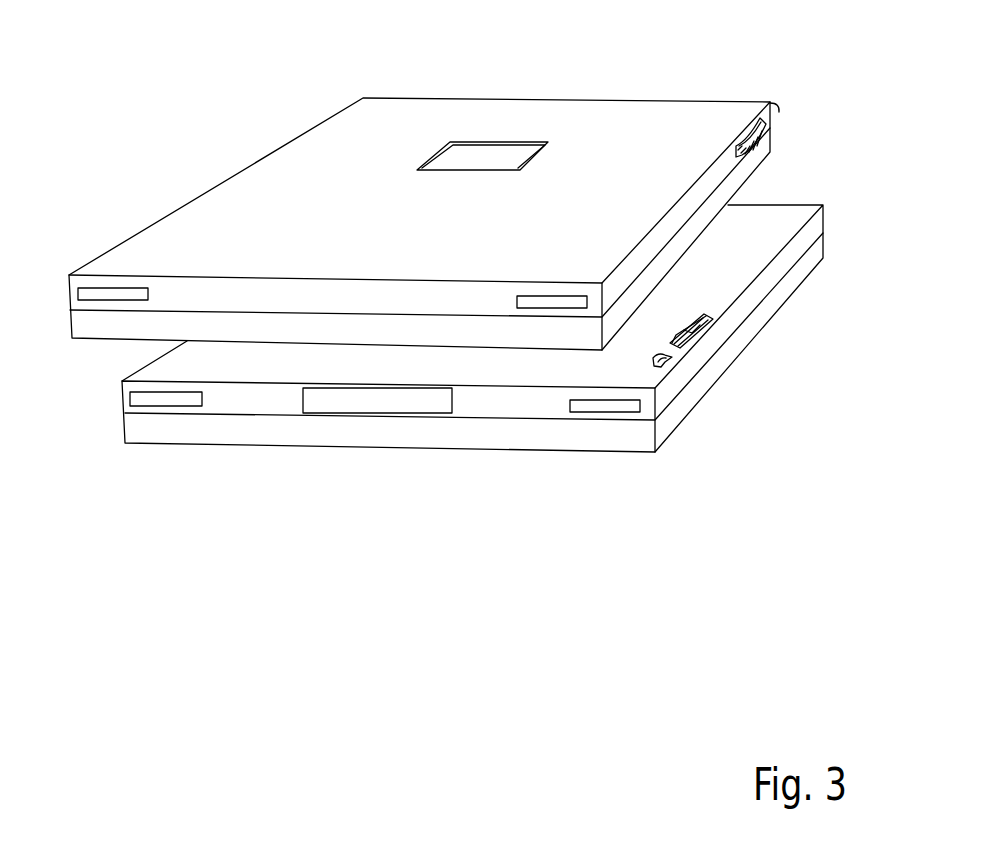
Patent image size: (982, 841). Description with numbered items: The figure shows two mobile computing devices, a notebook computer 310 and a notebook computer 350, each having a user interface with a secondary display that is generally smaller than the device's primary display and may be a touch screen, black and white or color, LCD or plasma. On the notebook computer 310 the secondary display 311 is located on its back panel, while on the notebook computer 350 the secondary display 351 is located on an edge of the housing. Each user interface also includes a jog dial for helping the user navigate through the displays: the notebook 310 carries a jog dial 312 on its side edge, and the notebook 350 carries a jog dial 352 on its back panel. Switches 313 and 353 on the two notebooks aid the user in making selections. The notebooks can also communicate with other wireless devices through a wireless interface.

The notebook computer 310 is at (100, 311).
The display 311 is at (503, 158).
The jog dial 312 is at (757, 120).
The switch 313 is at (777, 107).
The notebook computer 350 is at (700, 413).
The display 351 is at (310, 398).
The jog dial 352 is at (712, 318).
The switch 353 is at (666, 355).